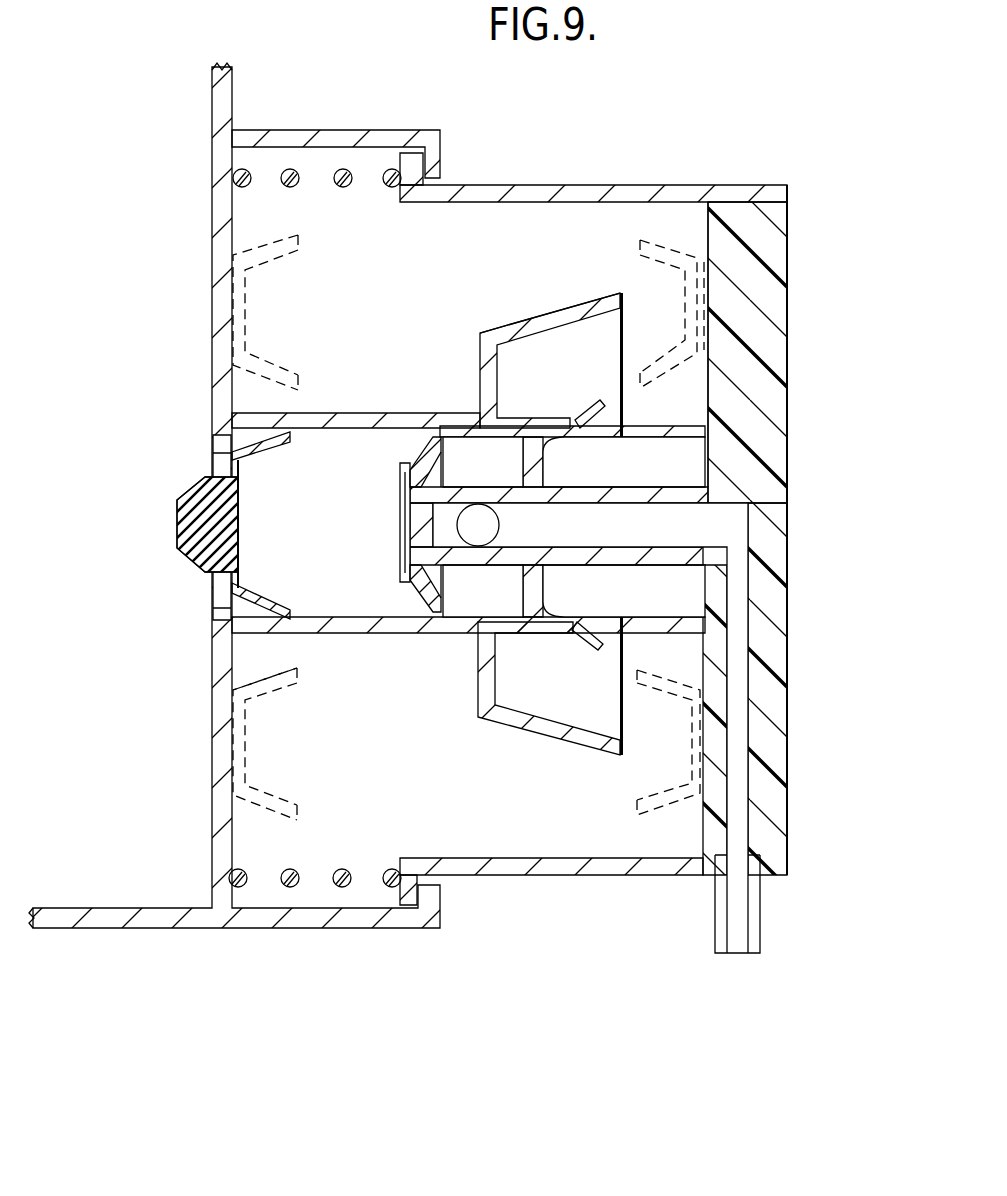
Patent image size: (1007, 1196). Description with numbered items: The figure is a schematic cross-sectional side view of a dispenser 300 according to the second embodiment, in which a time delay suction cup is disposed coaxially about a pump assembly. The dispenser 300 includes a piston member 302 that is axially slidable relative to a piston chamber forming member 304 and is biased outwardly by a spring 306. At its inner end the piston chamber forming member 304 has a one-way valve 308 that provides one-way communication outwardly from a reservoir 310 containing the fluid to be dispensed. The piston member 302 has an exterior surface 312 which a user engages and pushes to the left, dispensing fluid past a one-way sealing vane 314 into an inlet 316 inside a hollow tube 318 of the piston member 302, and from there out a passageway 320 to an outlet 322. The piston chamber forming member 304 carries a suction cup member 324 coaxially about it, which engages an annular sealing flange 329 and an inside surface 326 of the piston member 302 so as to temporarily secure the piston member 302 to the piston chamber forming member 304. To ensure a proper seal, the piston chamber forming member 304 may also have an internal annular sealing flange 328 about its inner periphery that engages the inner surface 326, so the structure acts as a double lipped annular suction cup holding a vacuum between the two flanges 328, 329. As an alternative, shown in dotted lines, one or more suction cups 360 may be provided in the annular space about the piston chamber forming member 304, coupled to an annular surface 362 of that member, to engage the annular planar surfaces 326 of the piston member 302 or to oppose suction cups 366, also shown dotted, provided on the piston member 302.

The dispenser 300 is at (563, 564).
The piston member 302 is at (563, 529).
The piston chamber forming member 304 is at (398, 128).
The spring 306 is at (345, 188).
The one-way valve 308 is at (177, 522).
The reservoir 310 is at (122, 373).
The exterior surface 312 is at (790, 350).
The one-way sealing vane 314 is at (432, 440).
The inlet 316 is at (500, 525).
The hollow tube 318 is at (640, 473).
The passageway 320 is at (745, 520).
The outlet 322 is at (729, 955).
The suction cup member 324 is at (511, 331).
The inside surface 326 is at (706, 395).
The internal annular sealing flange 328 is at (603, 406).
The annular sealing flange 329 is at (620, 292).
The suction cups 360 is at (290, 254).
The annular surface 362 is at (232, 672).
The suction cups 366 is at (660, 368).